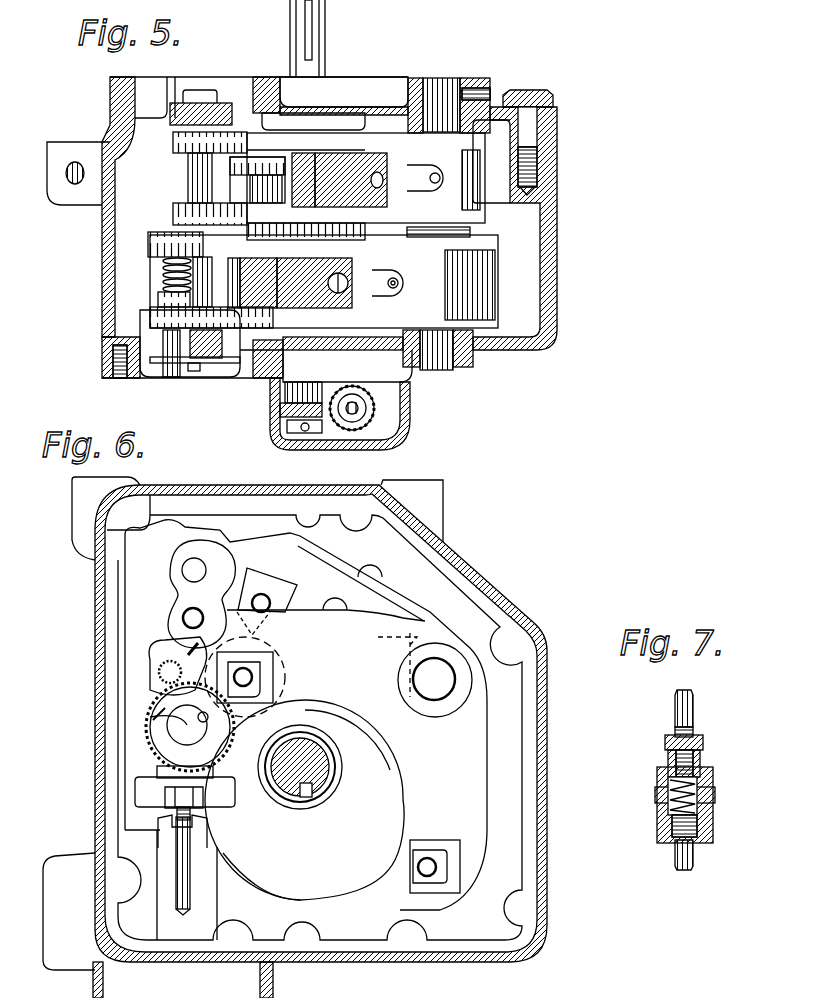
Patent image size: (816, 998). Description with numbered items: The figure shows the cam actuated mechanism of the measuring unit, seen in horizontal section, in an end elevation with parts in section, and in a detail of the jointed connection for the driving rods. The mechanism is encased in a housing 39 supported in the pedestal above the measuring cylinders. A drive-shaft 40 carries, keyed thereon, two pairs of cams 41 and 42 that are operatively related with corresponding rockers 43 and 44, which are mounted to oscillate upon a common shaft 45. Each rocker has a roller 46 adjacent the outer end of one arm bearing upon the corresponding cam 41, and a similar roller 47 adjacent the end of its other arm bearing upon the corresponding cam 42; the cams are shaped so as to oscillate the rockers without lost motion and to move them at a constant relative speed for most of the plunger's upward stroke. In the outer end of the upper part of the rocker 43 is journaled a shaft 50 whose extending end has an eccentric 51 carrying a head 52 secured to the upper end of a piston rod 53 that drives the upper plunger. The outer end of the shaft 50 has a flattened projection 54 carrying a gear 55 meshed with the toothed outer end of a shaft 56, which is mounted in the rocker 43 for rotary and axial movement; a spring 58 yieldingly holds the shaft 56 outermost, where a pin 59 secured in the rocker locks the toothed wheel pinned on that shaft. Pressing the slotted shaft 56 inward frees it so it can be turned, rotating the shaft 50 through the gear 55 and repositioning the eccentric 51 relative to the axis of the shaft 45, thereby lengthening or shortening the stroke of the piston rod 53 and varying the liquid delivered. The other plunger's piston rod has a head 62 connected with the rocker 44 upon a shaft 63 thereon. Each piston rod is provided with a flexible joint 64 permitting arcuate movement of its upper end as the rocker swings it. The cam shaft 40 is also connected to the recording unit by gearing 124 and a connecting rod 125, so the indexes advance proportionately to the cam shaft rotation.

In FIG. 5, the housing 39 is at (550, 240).
In FIG. 6, the housing 39 is at (478, 578).
In FIG. 5, the drive-shaft 40 is at (327, 63).
In FIG. 6, the drive-shaft 40 is at (320, 787).
In FIG. 6, the cam 41 is at (318, 767).
In FIG. 6, the cam 42 is at (352, 717).
In FIG. 5, the rocker 43 is at (323, 307).
In FIG. 6, the rocker 43 is at (306, 715).
In FIG. 5, the rocker 44 is at (366, 186).
In FIG. 6, the rocker 44 is at (326, 590).
In FIG. 5, the shaft 45 is at (440, 77).
In FIG. 6, the shaft 45 is at (433, 688).
In FIG. 5, the roller 46 is at (247, 172).
In FIG. 6, the roller 46 is at (247, 703).
In FIG. 6, the roller 47 is at (397, 877).
In FIG. 6, the shaft 50 is at (190, 730).
In FIG. 6, the eccentric 51 is at (181, 732).
In FIG. 5, the head 52 is at (213, 350).
In FIG. 6, the head 52 is at (203, 771).
In FIG. 6, the piston rod 53 is at (183, 914).
In FIG. 5, the flattened projection 54 is at (192, 372).
In FIG. 6, the flattened projection 54 is at (153, 720).
In FIG. 5, the gear 55 is at (210, 363).
In FIG. 6, the gear 55 is at (150, 717).
In FIG. 5, the shaft 56 is at (180, 378).
In FIG. 6, the shaft 56 is at (168, 665).
In FIG. 5, the spring 58 is at (163, 274).
In FIG. 6, the pin 59 is at (190, 655).
In FIG. 5, the head 62 is at (236, 104).
In FIG. 5, the shaft 63 is at (190, 176).
In FIG. 6, the shaft 63 is at (183, 617).
In FIG. 7, the flexible joint 64 is at (713, 772).
In FIG. 5, the gearing 124 is at (378, 408).
In FIG. 5, the connecting rod 125 is at (352, 418).